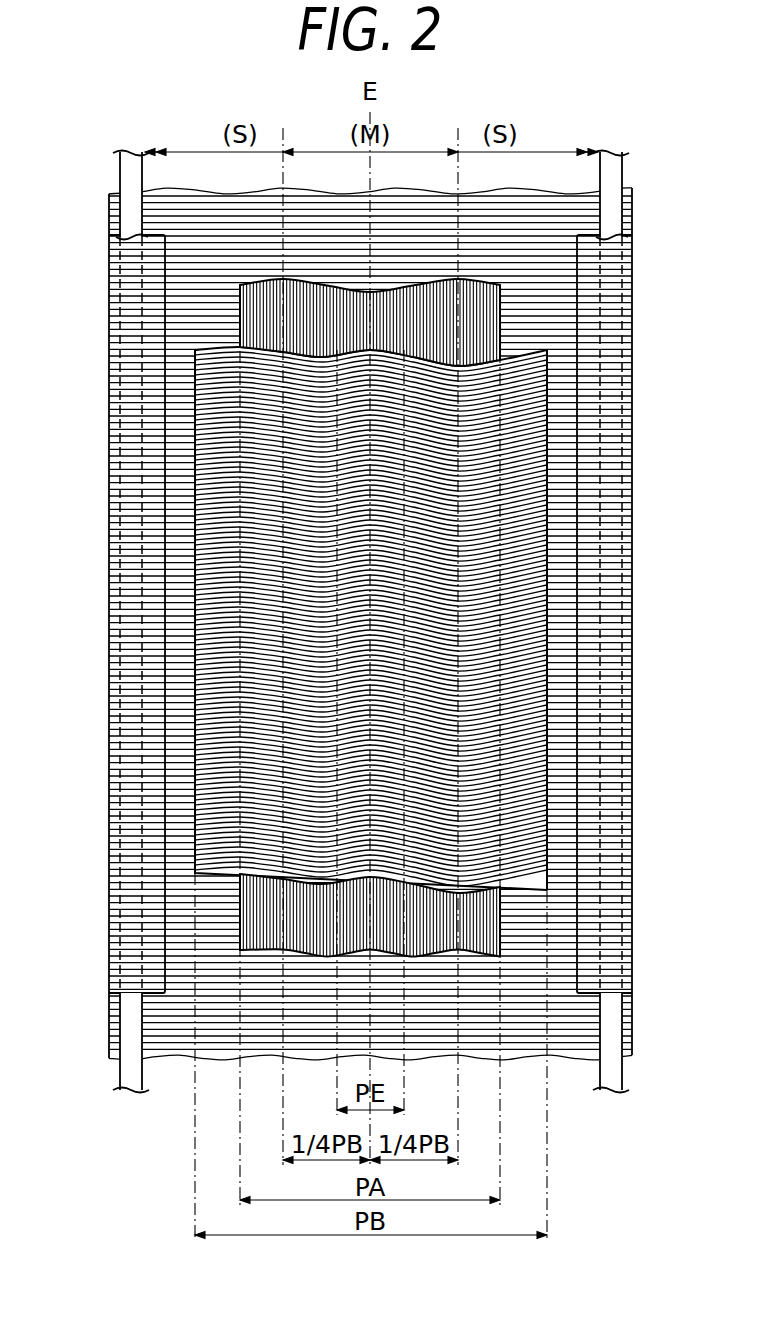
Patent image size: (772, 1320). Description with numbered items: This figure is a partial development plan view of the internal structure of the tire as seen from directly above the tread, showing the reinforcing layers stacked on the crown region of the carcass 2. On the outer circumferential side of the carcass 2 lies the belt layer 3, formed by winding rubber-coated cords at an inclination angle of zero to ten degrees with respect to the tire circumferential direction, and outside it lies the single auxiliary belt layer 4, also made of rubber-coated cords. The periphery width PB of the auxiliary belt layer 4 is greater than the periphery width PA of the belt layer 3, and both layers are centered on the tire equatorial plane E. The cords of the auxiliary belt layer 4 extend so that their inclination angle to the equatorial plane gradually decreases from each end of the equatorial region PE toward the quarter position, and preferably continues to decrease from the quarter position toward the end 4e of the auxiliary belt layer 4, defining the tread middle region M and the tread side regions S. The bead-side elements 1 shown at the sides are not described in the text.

The lead terminal 1 is at (130, 1068).
The carcass 2 is at (555, 972).
The belt layer 3 is at (482, 924).
The auxiliary belt layer 4 is at (475, 786).
The end of the auxiliary belt layer 4e is at (547, 713).